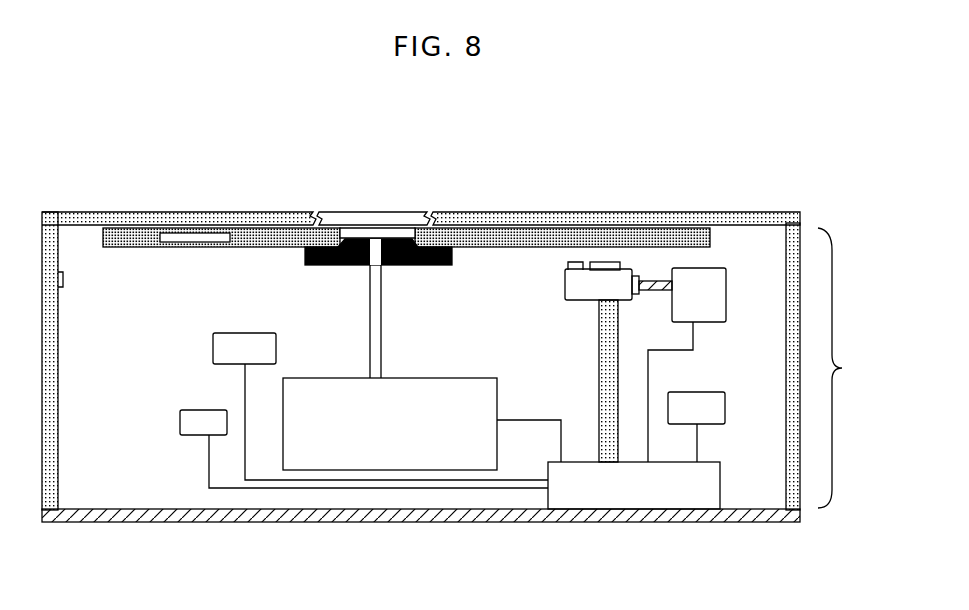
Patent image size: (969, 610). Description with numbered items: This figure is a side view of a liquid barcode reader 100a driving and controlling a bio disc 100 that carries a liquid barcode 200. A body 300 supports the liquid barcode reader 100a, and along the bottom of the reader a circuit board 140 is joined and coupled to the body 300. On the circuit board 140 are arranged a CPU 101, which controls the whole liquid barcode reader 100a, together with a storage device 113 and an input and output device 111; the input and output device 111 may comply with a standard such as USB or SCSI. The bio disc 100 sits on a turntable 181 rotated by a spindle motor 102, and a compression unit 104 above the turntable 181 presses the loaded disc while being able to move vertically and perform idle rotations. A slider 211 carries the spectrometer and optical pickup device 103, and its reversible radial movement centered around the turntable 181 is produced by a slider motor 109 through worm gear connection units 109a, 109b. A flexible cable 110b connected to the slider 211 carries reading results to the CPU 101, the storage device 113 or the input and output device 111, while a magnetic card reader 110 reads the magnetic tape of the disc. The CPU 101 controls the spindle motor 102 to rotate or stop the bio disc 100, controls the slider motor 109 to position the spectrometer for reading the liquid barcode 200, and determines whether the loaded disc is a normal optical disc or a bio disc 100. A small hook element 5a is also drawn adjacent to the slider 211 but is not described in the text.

The bio disc 100 is at (103, 235).
The liquid barcode reader 100a is at (854, 368).
The CPU 101 is at (634, 485).
The spindle motor 102 is at (422, 424).
The spectrometer and optical pickup device 103 is at (604, 264).
The compression unit 104 is at (410, 210).
The slider motor 109 is at (687, 365).
The worm gear connection unit 109a is at (655, 291).
The worm gear connection unit 109b is at (642, 276).
The magnetic card reader 110 is at (380, 406).
The flexible cable 110b is at (598, 380).
The input and output device 111 is at (696, 427).
The storage device 113 is at (364, 449).
The circuit board 140 is at (488, 518).
The turntable 181 is at (352, 238).
The liquid barcode 200 is at (197, 232).
The slider 211 is at (598, 284).
The body 300 is at (500, 212).
The hook 5a is at (562, 262).